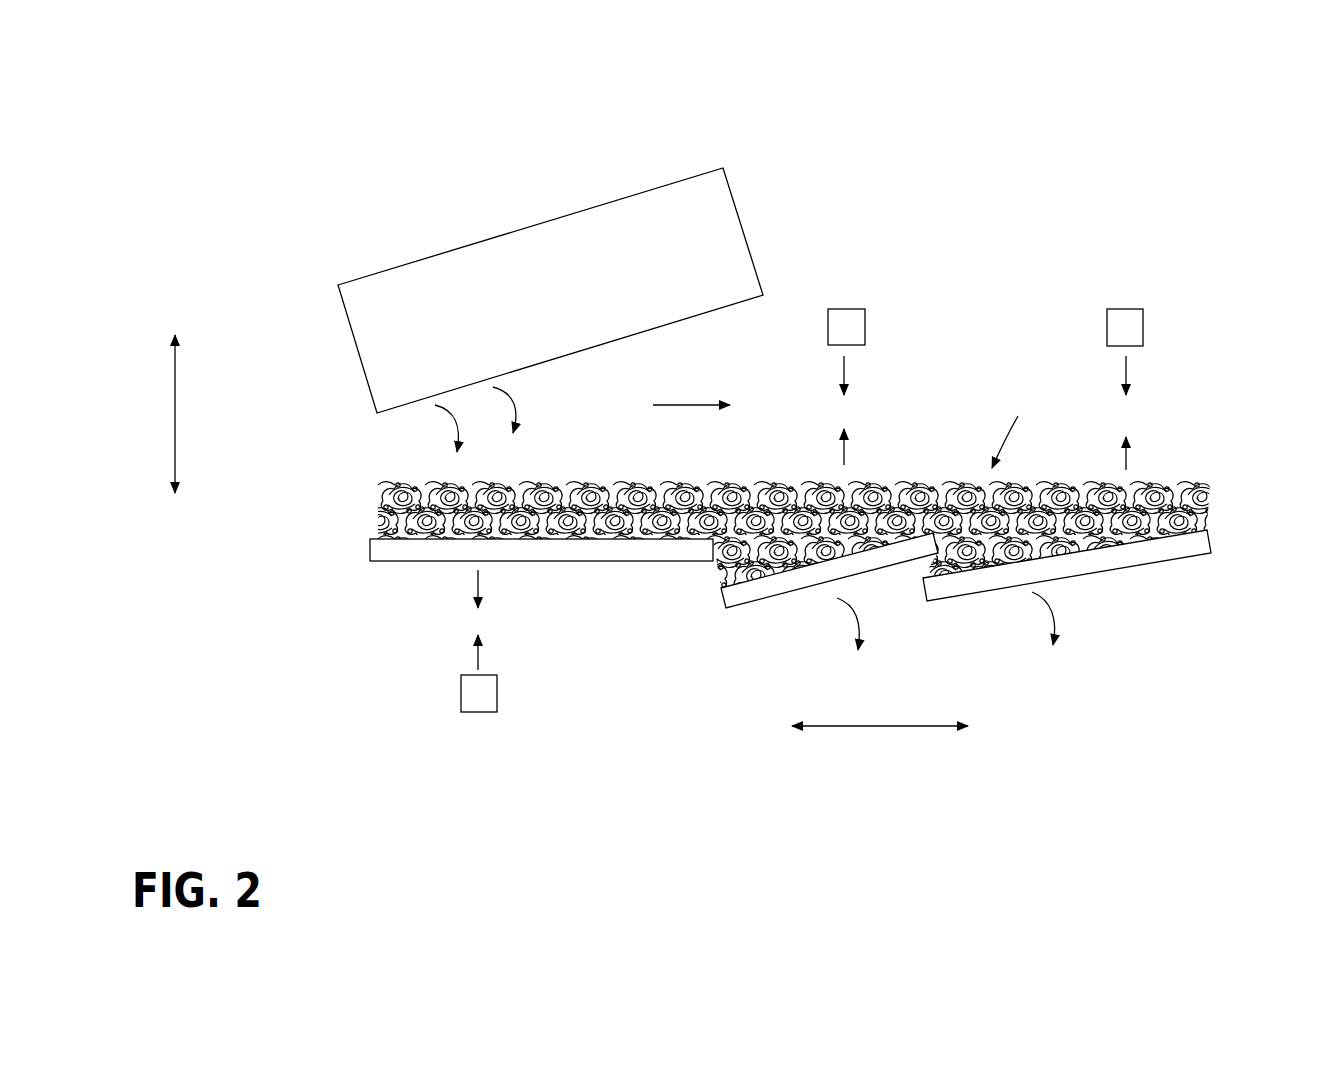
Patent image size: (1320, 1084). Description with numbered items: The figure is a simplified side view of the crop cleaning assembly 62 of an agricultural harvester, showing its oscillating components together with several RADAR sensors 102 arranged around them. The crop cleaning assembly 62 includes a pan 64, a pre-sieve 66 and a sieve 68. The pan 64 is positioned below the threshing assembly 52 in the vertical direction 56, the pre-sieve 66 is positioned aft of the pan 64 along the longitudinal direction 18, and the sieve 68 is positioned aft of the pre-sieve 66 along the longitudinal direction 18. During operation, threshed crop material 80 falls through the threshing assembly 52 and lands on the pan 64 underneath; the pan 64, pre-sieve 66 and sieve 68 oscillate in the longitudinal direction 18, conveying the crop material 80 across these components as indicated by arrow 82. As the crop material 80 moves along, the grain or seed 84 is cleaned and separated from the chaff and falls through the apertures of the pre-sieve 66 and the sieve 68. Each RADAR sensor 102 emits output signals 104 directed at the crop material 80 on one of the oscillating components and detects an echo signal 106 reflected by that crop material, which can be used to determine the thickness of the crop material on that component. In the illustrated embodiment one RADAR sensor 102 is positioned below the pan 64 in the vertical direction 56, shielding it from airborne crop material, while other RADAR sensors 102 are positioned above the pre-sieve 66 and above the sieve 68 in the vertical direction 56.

The longitudinal direction 18 is at (913, 727).
The threshing assembly 52 is at (585, 208).
The vertical direction 56 is at (173, 413).
The crop cleaning assembly 62 is at (297, 158).
The pan 64 is at (370, 553).
The pre-sieve 66 is at (723, 598).
The sieve 68 is at (1212, 542).
The crop material 80 is at (438, 418).
The arrow indicating conveyance of crop material 82 is at (682, 405).
The grain/seed 84 is at (852, 617).
The RADAR sensor 102 is at (850, 309).
The output signals 104 is at (845, 368).
The echo signal 106 is at (845, 452).